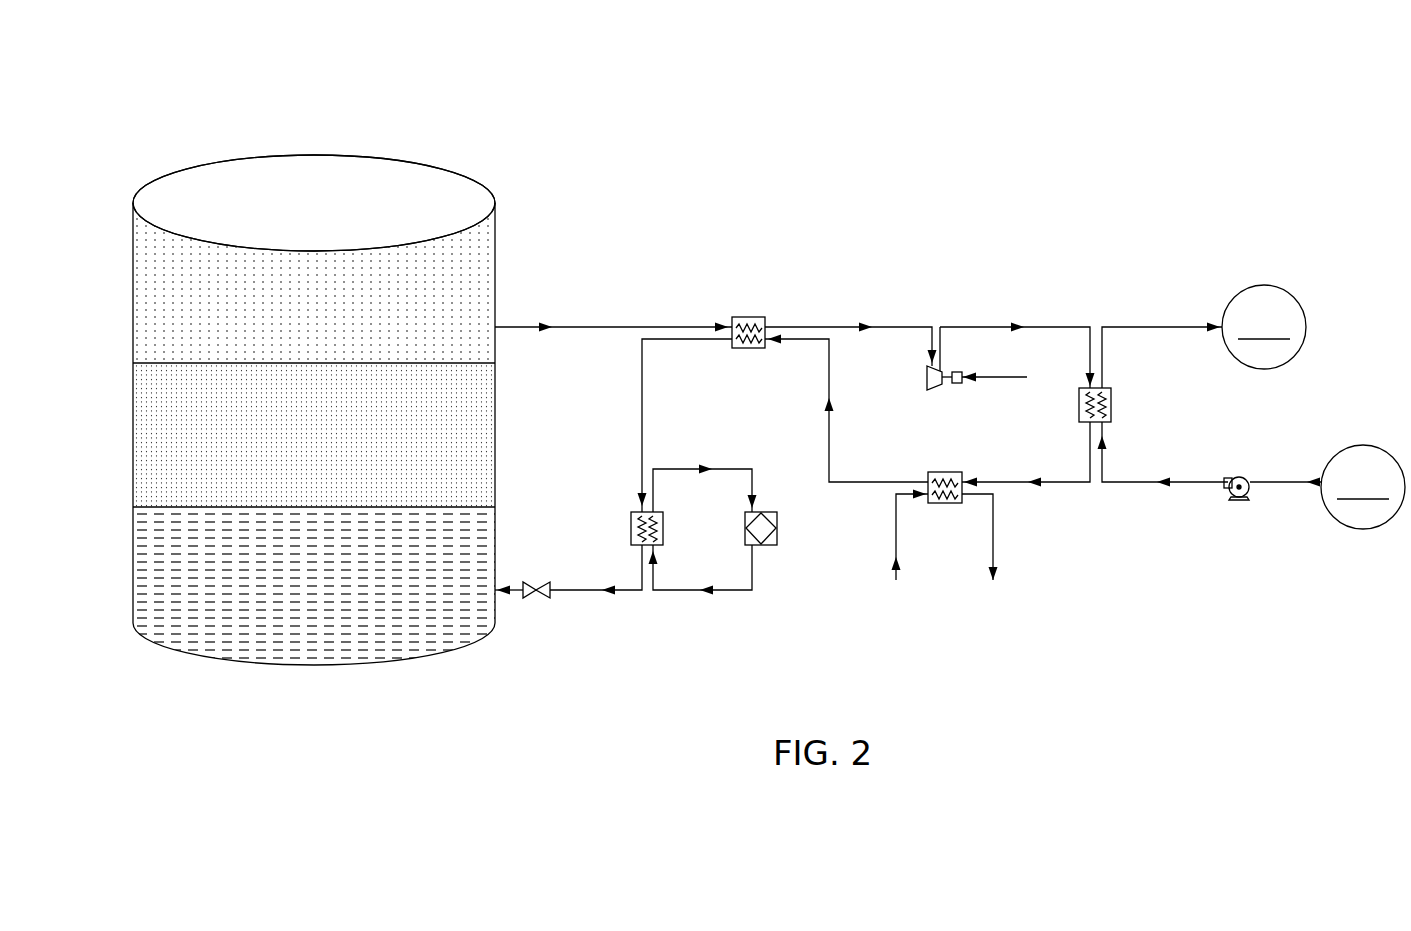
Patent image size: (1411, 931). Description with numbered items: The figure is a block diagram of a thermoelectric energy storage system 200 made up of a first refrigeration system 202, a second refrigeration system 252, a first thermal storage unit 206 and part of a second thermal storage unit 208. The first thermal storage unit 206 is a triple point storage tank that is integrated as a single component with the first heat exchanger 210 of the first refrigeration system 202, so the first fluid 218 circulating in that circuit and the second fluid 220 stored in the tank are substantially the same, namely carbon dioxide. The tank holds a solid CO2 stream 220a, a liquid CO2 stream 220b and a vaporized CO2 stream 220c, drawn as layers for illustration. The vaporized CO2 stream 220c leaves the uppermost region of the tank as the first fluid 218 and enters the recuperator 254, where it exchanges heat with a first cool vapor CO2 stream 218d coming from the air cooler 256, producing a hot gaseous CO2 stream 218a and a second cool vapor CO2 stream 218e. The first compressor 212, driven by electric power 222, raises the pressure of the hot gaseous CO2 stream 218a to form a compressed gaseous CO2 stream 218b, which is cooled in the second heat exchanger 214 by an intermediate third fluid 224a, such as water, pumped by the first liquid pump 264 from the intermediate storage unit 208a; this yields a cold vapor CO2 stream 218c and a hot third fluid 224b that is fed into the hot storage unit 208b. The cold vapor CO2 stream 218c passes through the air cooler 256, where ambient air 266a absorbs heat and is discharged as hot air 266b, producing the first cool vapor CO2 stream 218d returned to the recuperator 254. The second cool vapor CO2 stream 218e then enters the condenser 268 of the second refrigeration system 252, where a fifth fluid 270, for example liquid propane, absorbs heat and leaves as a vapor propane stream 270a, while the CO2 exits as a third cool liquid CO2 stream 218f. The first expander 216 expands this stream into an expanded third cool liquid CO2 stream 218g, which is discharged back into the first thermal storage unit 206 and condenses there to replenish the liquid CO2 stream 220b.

The thermoelectric energy storage system 200 is at (1200, 103).
The first refrigeration system 202 is at (668, 313).
The first thermal storage unit 206 is at (265, 157).
The second thermal storage unit 208 is at (1303, 336).
The intermediate storage unit 208a is at (1363, 487).
The hot storage unit 208b is at (1264, 327).
The first heat exchanger 210 is at (314, 176).
The first compressor 212 is at (935, 392).
The second heat exchanger 214 is at (1113, 404).
The first expander 216 is at (540, 595).
The first fluid 218 is at (550, 322).
The hot gaseous CO2 stream 218a is at (870, 322).
The compressed gaseous CO2 stream 218b is at (1022, 322).
The cold vapor CO2 stream 218c is at (1036, 480).
The first cool vapor CO2 stream 218d is at (835, 406).
The second cool vapor CO2 stream 218e is at (640, 414).
The third cool liquid CO2 stream 218f is at (612, 589).
The expanded third cool liquid CO2 stream 218g is at (503, 596).
The second fluid 220 is at (276, 708).
The solid CO2 stream 220a is at (140, 578).
The liquid CO2 stream 220b is at (140, 446).
The vaporized CO2 stream 220c is at (140, 306).
The electric power 222 is at (1005, 380).
The intermediate third fluid 224a is at (1305, 480).
The hot third fluid 224b is at (1218, 320).
The second refrigeration system 252 is at (729, 534).
The recuperator 254 is at (746, 316).
The air cooler 256 is at (936, 472).
The first liquid pump 264 is at (1232, 478).
The ambient air 266a is at (900, 565).
The hot air 266b is at (1000, 572).
The condenser 268 is at (630, 530).
The fifth fluid 270 is at (708, 589).
The vapor propane stream 270a is at (712, 468).